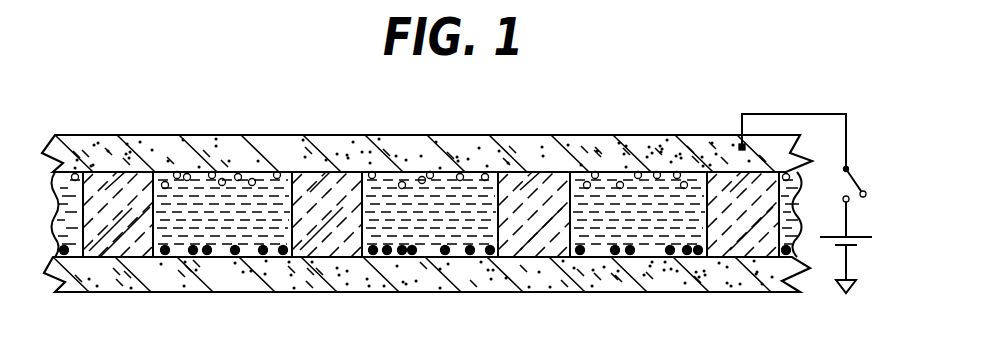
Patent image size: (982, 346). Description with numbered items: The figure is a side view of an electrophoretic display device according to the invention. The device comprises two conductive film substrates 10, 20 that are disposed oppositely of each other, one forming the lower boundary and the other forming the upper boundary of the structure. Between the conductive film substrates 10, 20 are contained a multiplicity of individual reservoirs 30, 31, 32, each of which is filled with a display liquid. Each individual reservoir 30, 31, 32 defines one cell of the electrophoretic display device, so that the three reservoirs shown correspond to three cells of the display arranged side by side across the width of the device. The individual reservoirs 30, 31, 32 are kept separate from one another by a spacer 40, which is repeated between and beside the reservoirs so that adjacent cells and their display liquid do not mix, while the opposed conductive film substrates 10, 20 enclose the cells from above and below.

The conductive film substrate 10 is at (107, 293).
The conductive film substrate 20 is at (134, 136).
The individual reservoir 30 is at (208, 228).
The individual reservoir 31 is at (437, 230).
The individual reservoir 32 is at (663, 230).
The spacer 40 is at (135, 211).